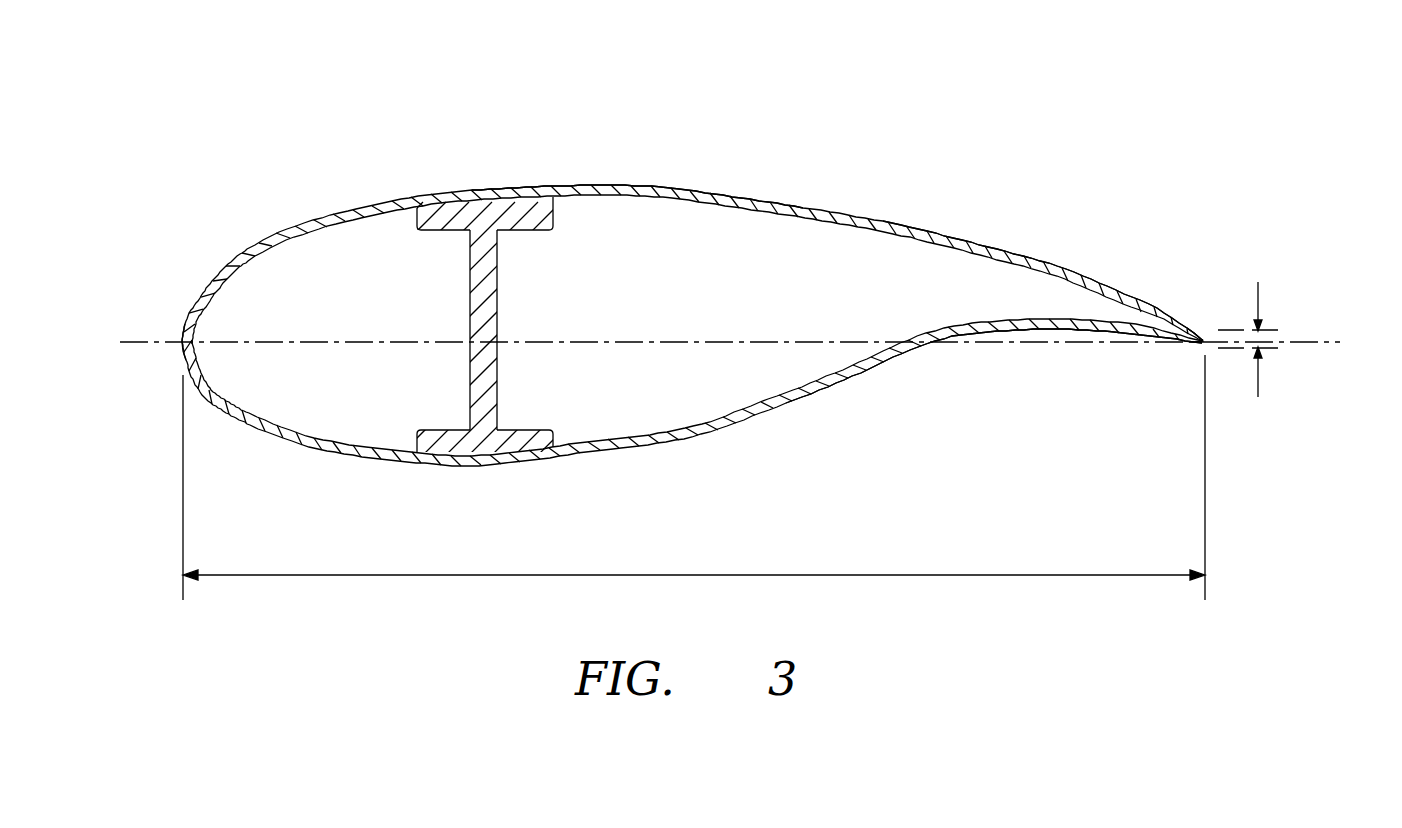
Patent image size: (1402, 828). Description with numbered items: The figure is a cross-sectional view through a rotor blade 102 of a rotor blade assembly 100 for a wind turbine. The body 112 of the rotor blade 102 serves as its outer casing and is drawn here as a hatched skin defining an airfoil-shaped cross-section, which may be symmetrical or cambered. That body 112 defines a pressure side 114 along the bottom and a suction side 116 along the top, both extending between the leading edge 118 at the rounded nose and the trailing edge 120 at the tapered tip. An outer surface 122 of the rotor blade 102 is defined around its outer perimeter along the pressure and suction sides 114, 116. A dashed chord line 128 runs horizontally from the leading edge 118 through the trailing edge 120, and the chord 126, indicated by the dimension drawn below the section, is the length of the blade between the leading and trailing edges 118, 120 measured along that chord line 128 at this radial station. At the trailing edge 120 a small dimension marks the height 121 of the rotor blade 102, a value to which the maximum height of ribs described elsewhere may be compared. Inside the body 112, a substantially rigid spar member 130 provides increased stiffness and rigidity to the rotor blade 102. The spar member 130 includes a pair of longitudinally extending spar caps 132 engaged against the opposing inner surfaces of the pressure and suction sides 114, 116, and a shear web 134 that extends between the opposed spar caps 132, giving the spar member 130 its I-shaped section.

The rotor blade assembly 100 is at (988, 86).
The rotor blade 102 is at (1009, 197).
The body 112 is at (579, 180).
The pressure side 114 is at (648, 445).
The suction side 116 is at (765, 190).
The leading edge 118 is at (182, 341).
The trailing edge 120 is at (1204, 337).
The height of the rotor blade at the trailing edge 121 is at (1262, 291).
The outer surface 122 is at (880, 205).
The chord 126 is at (855, 577).
The chord line 128 is at (1293, 340).
The spar member 130 is at (502, 327).
The spar caps 132 is at (535, 218).
The shear web 134 is at (473, 302).